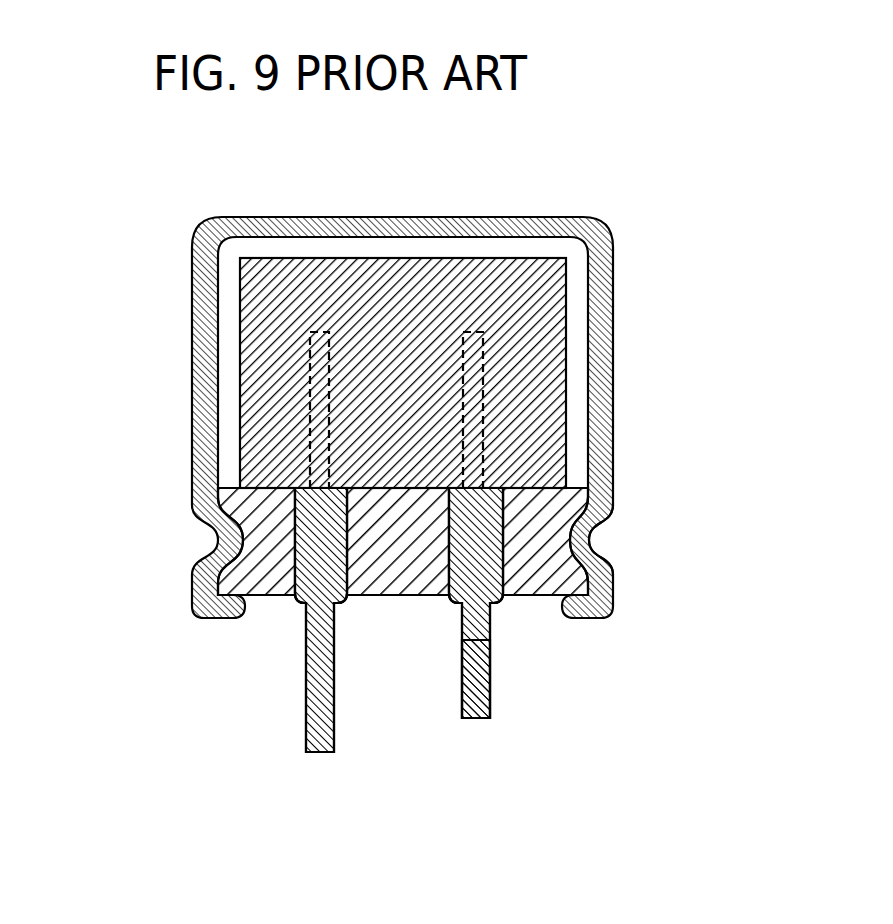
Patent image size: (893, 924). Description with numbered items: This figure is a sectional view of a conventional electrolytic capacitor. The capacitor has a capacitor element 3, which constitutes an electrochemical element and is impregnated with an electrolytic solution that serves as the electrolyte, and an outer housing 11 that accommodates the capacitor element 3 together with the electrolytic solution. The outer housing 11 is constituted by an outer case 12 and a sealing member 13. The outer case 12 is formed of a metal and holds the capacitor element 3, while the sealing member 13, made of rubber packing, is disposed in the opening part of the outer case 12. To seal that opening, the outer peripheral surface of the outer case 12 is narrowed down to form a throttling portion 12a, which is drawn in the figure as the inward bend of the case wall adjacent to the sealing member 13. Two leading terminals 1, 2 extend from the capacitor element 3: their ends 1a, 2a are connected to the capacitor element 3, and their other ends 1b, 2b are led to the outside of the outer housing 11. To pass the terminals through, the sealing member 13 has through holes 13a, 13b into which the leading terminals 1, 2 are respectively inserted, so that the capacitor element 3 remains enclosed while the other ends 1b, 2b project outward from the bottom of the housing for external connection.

The leading terminal 1 is at (202, 542).
The end of leading terminal 1a is at (290, 410).
The other end of leading terminal 1b is at (333, 574).
The leading terminal 2 is at (608, 525).
The end of leading terminal 2a is at (586, 517).
The other end of leading terminal 2b is at (520, 596).
The capacitor element 3 is at (433, 263).
The outer housing 11 is at (482, 465).
The outer case 12 is at (450, 417).
The throttling portion 12a is at (602, 533).
The sealing member 13 is at (459, 554).
The through hole 13a is at (346, 570).
The through hole 13b is at (447, 556).